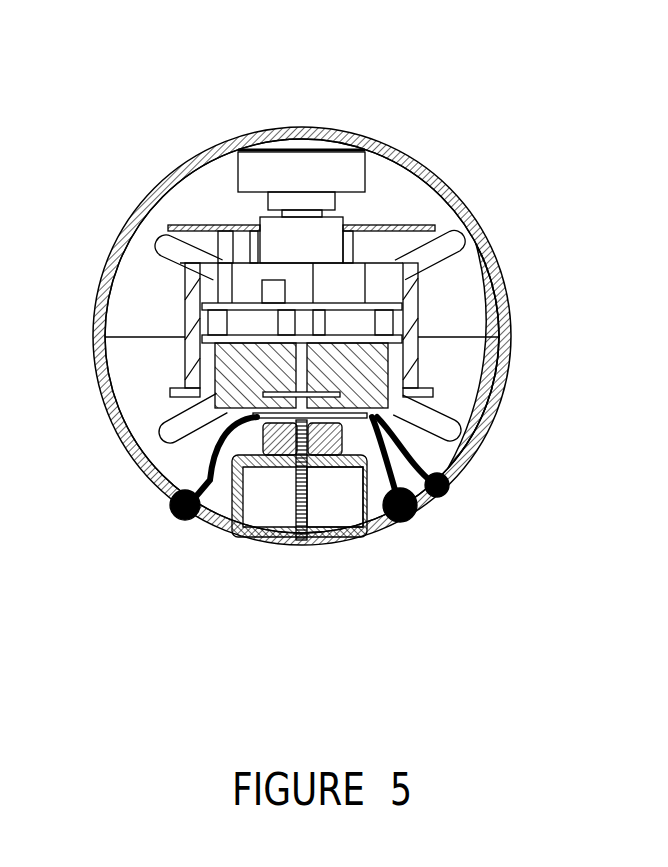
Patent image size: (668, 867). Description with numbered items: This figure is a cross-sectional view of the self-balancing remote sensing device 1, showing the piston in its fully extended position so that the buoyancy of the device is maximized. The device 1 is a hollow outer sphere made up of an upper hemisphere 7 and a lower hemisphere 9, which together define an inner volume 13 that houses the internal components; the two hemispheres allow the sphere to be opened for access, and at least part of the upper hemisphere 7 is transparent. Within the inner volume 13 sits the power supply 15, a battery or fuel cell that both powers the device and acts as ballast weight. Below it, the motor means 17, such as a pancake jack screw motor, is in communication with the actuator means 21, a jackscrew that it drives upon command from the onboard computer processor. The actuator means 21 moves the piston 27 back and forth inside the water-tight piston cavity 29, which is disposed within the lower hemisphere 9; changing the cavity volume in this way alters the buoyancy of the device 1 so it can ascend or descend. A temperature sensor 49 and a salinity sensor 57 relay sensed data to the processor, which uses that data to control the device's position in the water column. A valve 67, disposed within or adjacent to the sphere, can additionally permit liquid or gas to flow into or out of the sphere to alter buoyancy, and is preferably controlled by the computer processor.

The self-balancing remote sensing device 1 is at (139, 145).
The upper hemisphere 7 is at (512, 250).
The lower hemisphere 9 is at (505, 393).
The inner volume 13 is at (402, 191).
The power supply 15 is at (392, 368).
The motor means 17 is at (262, 438).
The actuator means 21 is at (298, 495).
The piston 27 is at (295, 520).
The piston cavity 29 is at (322, 513).
The temperature sensor 49 is at (440, 487).
The salinity sensor 57 is at (412, 522).
The valve 67 is at (170, 512).